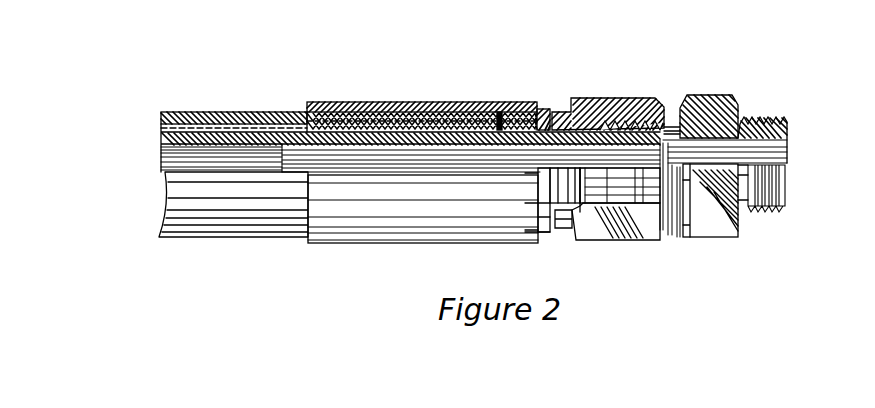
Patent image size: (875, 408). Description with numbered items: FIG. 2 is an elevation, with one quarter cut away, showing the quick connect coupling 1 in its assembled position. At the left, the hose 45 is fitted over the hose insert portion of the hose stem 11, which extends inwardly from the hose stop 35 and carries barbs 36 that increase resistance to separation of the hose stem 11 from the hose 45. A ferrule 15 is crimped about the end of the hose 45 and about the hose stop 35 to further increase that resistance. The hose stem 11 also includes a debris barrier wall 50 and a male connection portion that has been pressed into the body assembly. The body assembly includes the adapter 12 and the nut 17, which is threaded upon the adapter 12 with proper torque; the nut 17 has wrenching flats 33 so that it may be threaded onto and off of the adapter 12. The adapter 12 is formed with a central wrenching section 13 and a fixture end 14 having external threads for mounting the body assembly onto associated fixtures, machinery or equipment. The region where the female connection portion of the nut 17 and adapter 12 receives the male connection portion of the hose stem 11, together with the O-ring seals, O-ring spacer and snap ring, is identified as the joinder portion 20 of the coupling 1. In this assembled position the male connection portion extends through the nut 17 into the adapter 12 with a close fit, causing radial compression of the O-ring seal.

The quick connect coupling 1 is at (303, 268).
The hose 45 is at (225, 112).
The hose stem 11 is at (268, 96).
The ferrule 15 is at (372, 101).
The barbs 36 is at (421, 120).
The hose stop 35 is at (499, 128).
The debris barrier wall 50 is at (537, 107).
The nut 17 is at (628, 77).
The adapter 12 is at (741, 77).
The fixture end 14 is at (771, 120).
The central wrenching section 13 is at (710, 238).
The wrenching flats 33 is at (590, 242).
The joinder portion 20 is at (670, 268).